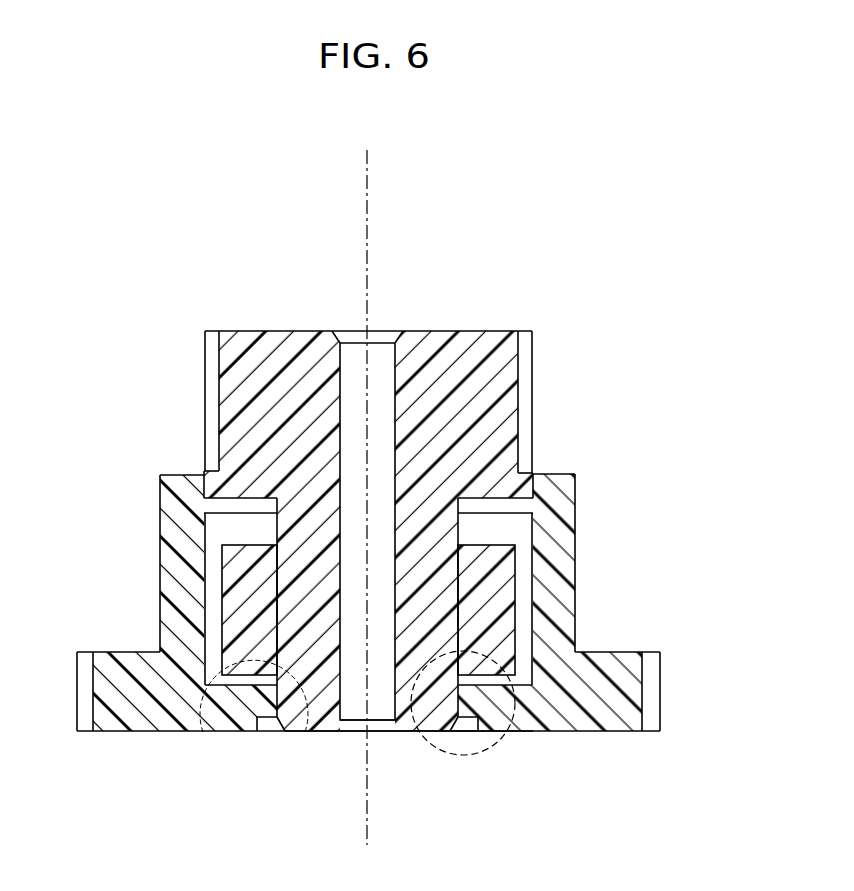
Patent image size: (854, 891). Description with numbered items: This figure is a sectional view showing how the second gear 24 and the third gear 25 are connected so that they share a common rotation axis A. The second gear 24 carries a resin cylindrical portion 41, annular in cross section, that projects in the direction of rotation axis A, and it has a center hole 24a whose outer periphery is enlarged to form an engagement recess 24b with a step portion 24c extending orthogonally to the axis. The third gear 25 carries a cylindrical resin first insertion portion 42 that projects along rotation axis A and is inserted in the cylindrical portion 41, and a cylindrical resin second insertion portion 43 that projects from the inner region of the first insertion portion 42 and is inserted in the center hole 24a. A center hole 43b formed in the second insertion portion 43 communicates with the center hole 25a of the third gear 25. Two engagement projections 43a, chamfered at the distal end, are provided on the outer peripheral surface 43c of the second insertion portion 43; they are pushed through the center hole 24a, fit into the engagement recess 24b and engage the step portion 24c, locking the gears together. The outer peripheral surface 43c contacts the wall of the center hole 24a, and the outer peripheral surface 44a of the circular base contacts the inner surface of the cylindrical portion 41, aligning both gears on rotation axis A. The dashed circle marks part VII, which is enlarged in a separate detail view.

The rotation axis A is at (370, 172).
The third gear 25 is at (545, 348).
The center hole of the third gear 25a is at (353, 360).
The second gear 24 is at (672, 686).
The center hole of the second gear 24a is at (305, 732).
The engagement recess 24b is at (477, 708).
The step portion 24c is at (483, 706).
The cylindrical portion 41 is at (578, 603).
The first insertion portion 42 is at (516, 572).
The second insertion portion 43 is at (287, 739).
The engagement projections 43a is at (470, 712).
The center hole of the second insertion portion 43b is at (350, 692).
The outer peripheral surface of the second insertion portion 43c is at (203, 733).
The outer peripheral surface of the circular base 44a is at (537, 482).
The part VII is at (493, 756).